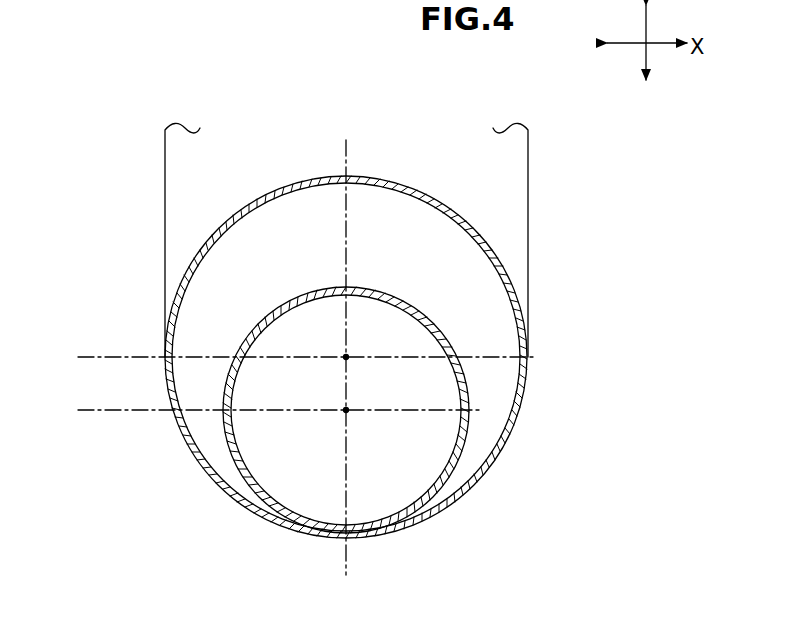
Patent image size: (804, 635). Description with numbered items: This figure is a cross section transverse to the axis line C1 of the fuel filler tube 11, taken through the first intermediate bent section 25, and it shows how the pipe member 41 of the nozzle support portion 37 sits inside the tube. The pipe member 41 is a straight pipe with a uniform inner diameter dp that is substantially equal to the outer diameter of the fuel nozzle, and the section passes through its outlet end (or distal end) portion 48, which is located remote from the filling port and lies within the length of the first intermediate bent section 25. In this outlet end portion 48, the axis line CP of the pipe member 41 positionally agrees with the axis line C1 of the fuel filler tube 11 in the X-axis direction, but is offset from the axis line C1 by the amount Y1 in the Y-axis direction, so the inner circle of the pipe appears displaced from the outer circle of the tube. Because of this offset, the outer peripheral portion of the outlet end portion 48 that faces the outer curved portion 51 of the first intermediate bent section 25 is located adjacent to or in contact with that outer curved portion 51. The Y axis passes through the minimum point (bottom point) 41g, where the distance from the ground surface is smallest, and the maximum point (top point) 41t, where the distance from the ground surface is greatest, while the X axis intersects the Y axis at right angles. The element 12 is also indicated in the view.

The fuel filler tube 11 is at (145, 95).
The rotor 12 is at (238, 268).
The first intermediate bent section 25 is at (342, 128).
The nozzle support portion 37 is at (230, 323).
The pipe member 41 is at (283, 300).
The maximum point (top point) 41t is at (346, 181).
The minimum point (bottom point) 41g is at (345, 540).
The outlet end portion 48 is at (446, 192).
The outer curved portion 51 is at (455, 505).
The axis line of the fuel filler tube C1 is at (347, 355).
The axis line of the pipe member CP is at (346, 410).
The inner diameter of the pipe member dp is at (235, 438).
The offset amount Y1 is at (85, 357).